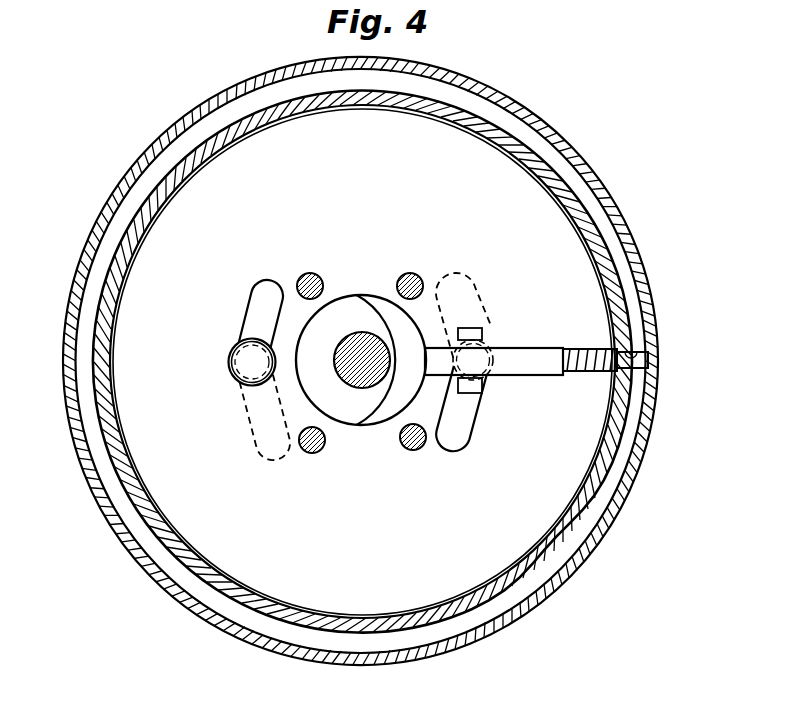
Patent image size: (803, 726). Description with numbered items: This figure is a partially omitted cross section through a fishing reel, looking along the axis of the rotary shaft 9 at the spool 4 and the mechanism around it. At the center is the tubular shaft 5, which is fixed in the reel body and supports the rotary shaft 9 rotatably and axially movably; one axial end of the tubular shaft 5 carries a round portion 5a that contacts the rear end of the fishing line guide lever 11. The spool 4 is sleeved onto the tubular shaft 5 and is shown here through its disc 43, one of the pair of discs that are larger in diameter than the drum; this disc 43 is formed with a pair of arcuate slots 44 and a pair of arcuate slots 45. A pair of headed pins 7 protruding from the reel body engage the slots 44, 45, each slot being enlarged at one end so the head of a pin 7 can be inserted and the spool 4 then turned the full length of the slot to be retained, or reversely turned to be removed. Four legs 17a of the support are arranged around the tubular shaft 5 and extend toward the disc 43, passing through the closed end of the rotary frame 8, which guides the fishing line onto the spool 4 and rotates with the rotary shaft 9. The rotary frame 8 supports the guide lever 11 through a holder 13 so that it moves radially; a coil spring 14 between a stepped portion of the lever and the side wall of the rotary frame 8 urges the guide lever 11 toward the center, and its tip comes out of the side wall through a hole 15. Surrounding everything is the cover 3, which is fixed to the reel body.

The cover 3 is at (652, 438).
The spool 4 is at (567, 570).
The tubular shaft 5 is at (379, 297).
The round portion 5a is at (337, 306).
The headed pins 7 is at (243, 366).
The rotary frame 8 is at (585, 505).
The rotary shaft 9 is at (357, 383).
The fishing line guide lever 11 is at (543, 368).
The holder 13 is at (475, 388).
The coil spring 14 is at (578, 343).
The hole 15 is at (640, 352).
The legs 17a is at (305, 272).
The disc 43 is at (487, 563).
The arcuate slots 44 is at (245, 418).
The arcuate slots 45 is at (249, 308).